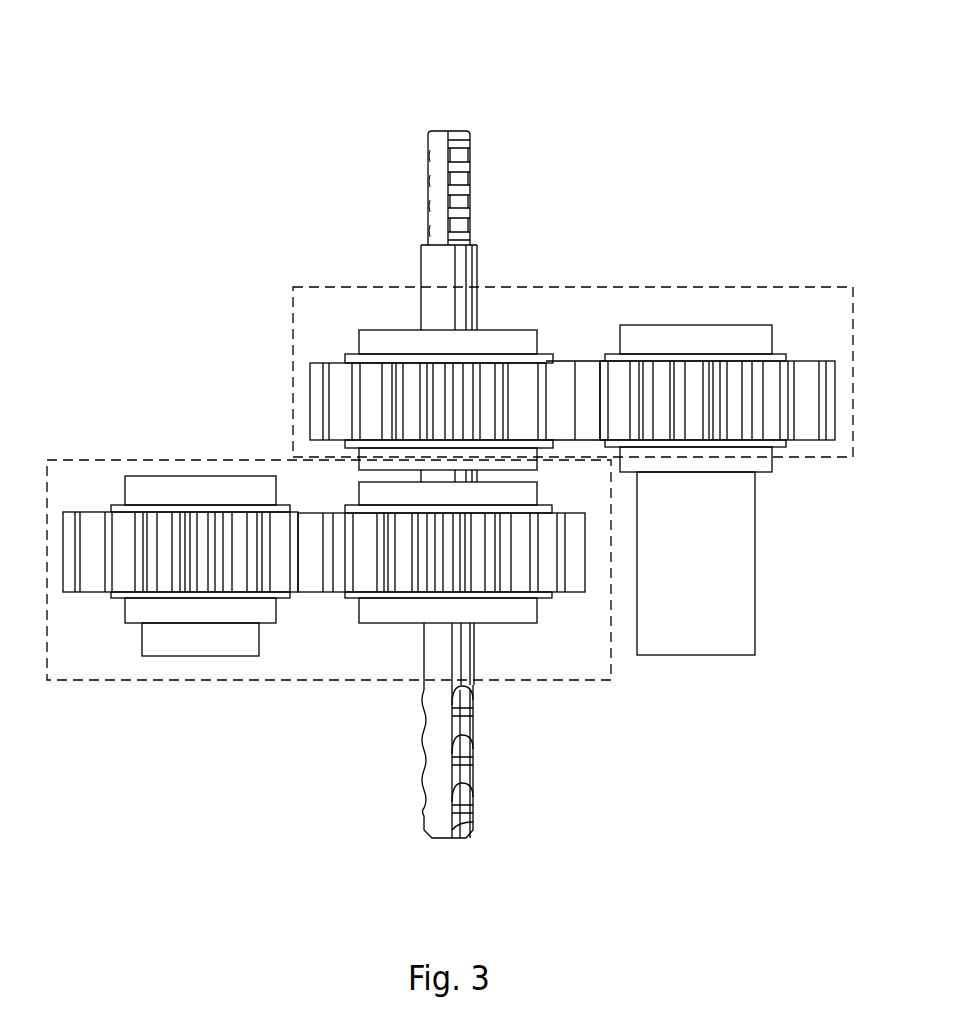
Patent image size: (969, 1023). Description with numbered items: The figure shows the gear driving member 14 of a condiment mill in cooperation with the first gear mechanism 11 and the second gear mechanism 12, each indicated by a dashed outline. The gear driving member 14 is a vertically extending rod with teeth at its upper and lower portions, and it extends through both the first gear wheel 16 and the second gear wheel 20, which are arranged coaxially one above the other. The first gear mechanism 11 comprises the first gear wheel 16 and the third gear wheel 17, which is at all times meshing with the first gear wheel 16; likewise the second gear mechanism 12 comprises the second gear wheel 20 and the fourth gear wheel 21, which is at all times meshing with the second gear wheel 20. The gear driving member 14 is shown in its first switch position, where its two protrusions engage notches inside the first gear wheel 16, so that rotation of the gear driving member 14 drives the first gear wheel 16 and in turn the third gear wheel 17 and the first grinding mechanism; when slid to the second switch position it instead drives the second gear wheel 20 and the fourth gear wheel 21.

The first gear mechanism 11 is at (173, 678).
The second gear mechanism 12 is at (578, 286).
The gear driving member 14 is at (438, 262).
The first gear wheel 16 is at (398, 612).
The third gear wheel 17 is at (148, 483).
The second gear wheel 20 is at (401, 344).
The fourth gear wheel 21 is at (697, 353).